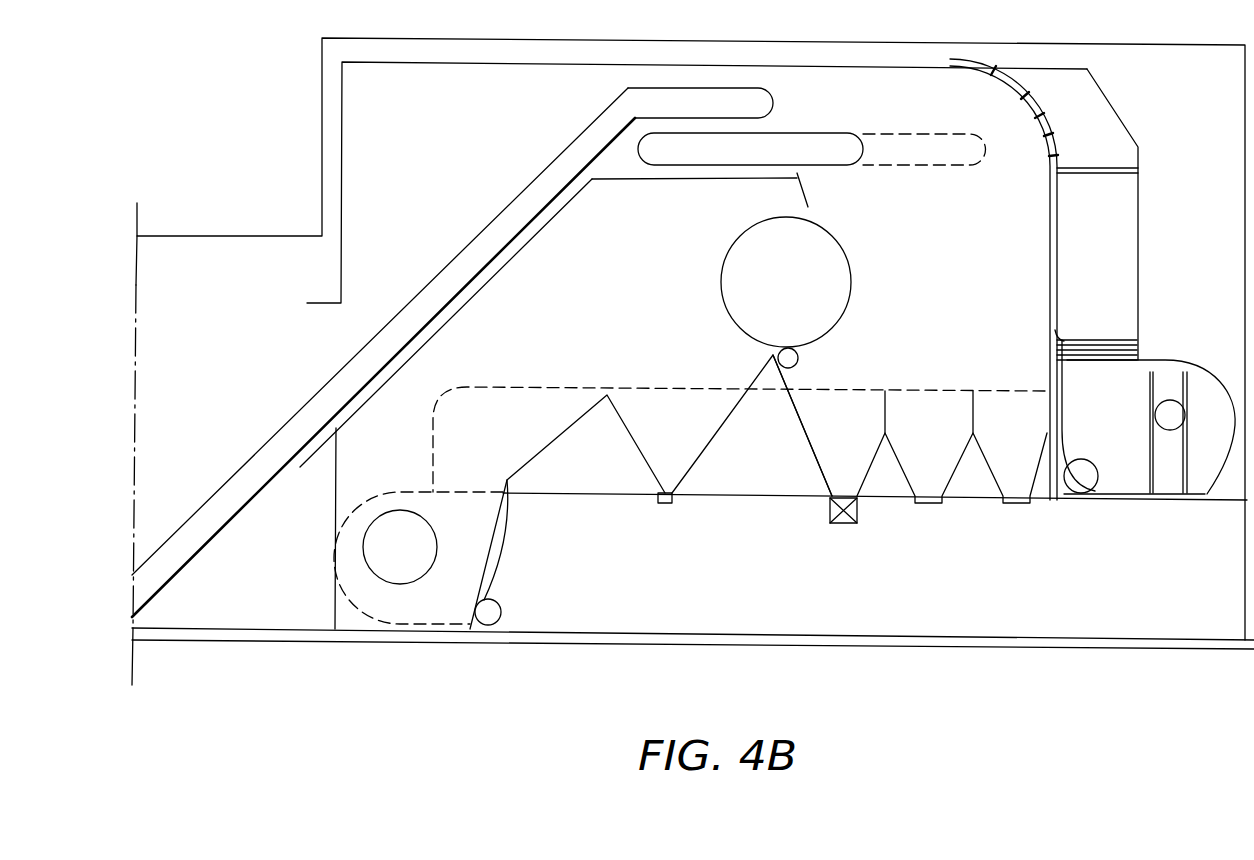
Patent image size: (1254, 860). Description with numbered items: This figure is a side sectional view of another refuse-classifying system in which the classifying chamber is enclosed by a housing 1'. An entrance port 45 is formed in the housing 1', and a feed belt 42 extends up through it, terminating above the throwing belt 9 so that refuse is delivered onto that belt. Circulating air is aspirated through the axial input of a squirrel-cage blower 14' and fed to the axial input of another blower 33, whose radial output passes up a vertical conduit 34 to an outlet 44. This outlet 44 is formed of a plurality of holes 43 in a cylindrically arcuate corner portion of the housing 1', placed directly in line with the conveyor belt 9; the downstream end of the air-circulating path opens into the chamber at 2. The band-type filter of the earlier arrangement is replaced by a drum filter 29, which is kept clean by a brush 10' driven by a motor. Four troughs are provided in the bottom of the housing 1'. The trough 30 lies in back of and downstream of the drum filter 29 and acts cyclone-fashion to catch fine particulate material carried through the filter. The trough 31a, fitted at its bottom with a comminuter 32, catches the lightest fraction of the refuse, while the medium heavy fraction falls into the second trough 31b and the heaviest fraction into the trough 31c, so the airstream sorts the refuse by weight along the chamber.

The classifying chamber housing 1' is at (693, 347).
The downstream end opening of air-circulating conduit 2 is at (360, 460).
The throwing belt 9 is at (676, 153).
The cleaning brush 10' is at (821, 356).
The squirrel-cage blower 14' is at (664, 506).
The drum filter 29 is at (833, 240).
The trough 30 is at (673, 457).
The trough 31a is at (852, 452).
The second trough 31b is at (937, 450).
The trough 31c is at (1022, 452).
The comminuter 32 is at (843, 523).
The blower 33 is at (1212, 438).
The vertical conduit 34 is at (1115, 215).
The feed belt 42 is at (503, 212).
The holes 43 is at (1022, 103).
The outlet 44 is at (1030, 143).
The entrance port 45 is at (337, 335).